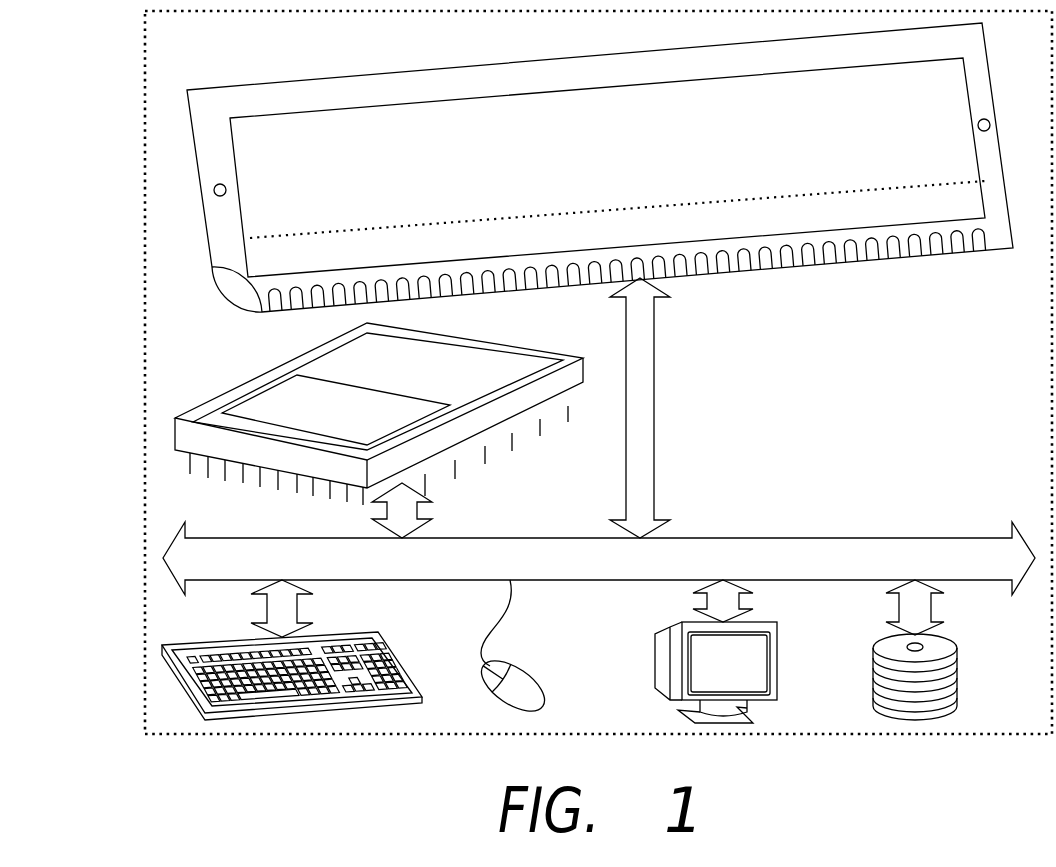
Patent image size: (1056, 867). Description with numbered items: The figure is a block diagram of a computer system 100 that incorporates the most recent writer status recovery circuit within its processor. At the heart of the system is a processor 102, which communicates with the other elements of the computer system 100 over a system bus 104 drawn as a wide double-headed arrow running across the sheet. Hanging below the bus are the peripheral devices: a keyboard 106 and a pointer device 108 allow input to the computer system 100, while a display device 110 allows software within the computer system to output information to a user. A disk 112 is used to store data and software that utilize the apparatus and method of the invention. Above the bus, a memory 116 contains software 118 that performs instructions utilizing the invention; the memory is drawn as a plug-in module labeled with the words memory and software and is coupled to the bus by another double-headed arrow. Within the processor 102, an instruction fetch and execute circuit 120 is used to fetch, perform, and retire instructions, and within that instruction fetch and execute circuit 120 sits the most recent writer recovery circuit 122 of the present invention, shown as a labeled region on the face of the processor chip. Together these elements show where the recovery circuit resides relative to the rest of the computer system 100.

The computer system 100 is at (263, 734).
The processor 102 is at (518, 345).
The system bus 104 is at (736, 537).
The keyboard 106 is at (378, 632).
The pointer device 108 is at (533, 667).
The display monitor 110 is at (778, 652).
The disk 112 is at (948, 643).
The memory 116 is at (448, 67).
The software 118 is at (249, 280).
The instruction fetch and execute circuit 120 is at (517, 392).
The most recent writer recovery circuit 122 is at (268, 387).